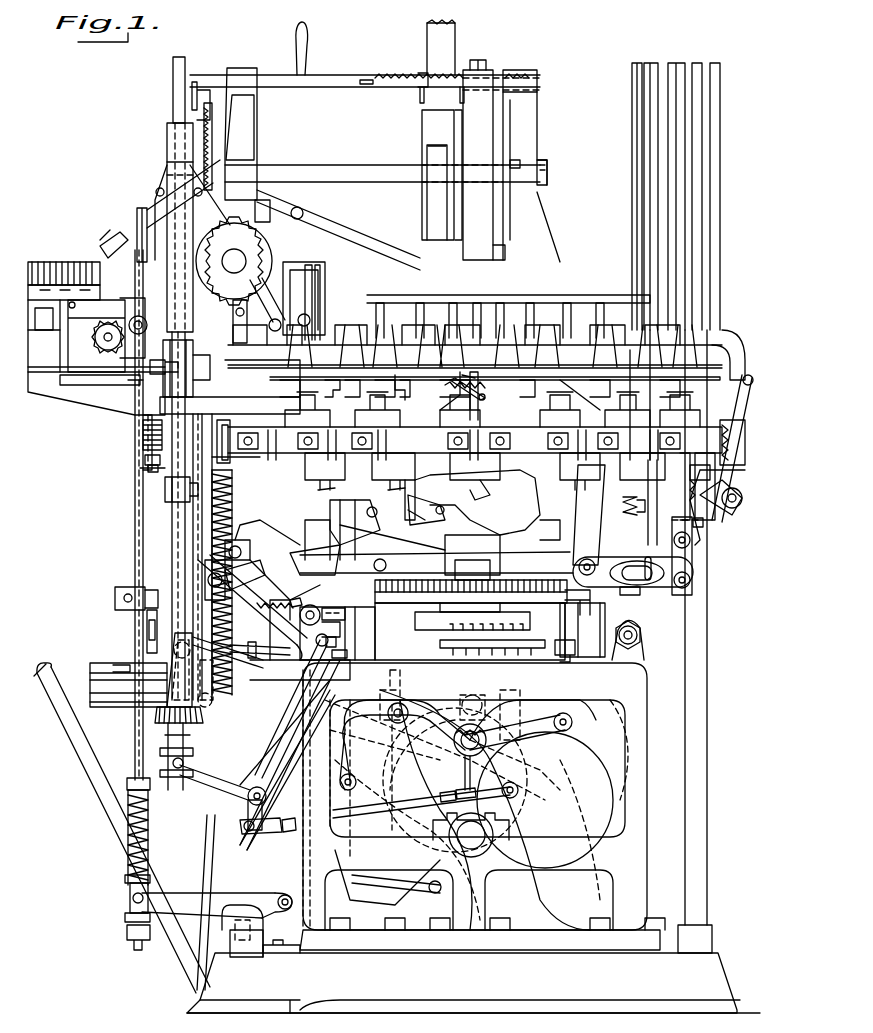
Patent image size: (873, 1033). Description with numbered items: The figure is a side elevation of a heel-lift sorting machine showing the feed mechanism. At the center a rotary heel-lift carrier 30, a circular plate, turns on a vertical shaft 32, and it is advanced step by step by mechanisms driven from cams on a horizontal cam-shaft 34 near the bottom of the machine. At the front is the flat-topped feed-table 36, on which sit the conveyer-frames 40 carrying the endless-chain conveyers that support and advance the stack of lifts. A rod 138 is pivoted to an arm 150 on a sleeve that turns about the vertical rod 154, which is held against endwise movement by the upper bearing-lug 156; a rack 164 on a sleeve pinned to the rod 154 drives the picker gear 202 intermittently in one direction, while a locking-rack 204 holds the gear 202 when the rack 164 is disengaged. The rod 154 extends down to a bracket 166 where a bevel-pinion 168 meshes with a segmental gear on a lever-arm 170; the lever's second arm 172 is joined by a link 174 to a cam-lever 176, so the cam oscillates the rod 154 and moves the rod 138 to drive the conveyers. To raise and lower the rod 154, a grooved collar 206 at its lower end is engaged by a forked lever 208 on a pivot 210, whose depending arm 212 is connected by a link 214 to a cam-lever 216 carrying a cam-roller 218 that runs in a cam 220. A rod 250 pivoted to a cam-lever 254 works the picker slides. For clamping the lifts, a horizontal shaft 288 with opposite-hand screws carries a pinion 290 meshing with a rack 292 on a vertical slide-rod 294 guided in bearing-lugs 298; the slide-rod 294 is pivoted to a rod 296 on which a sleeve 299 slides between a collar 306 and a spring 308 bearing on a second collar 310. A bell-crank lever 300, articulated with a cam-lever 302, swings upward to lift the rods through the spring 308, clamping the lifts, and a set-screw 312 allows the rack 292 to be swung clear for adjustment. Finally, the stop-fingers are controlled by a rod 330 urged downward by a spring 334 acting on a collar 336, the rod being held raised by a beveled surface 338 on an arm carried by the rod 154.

The rotary heel-lift carrier 30 is at (600, 375).
The vertical shaft 32 is at (500, 542).
The horizontal cam-shaft 34 is at (470, 858).
The feed-table 36 is at (40, 360).
The conveyer-frames 40 is at (36, 318).
The rod 138 is at (50, 385).
The arm 150 is at (200, 360).
The rod 154 is at (175, 72).
The upper bearing-lug 156 is at (172, 123).
The rack 164 is at (209, 220).
The bracket 166 is at (165, 700).
The bevel-pinion 168 is at (165, 730).
The lever-arm 170 is at (155, 714).
The second lever-arm 172 is at (175, 600).
The link 174 is at (266, 662).
The cam-lever 176 is at (420, 705).
The gear 202 is at (288, 262).
The locking-rack 204 is at (232, 253).
The grooved collar 206 is at (99, 785).
The lever 208 is at (230, 790).
The pivot 210 is at (243, 826).
The depending arm 212 is at (250, 840).
The link 214 is at (370, 805).
The cam-lever 216 is at (520, 745).
The cam-roller 218 is at (510, 765).
The cam 220 is at (555, 812).
The rod 250 is at (212, 538).
The cam-lever 254 is at (220, 705).
The horizontal shaft 288 is at (100, 342).
The pinion 290 is at (98, 328).
The rack 292 is at (110, 246).
The vertical slide-rod 294 is at (143, 445).
The rod 296 is at (130, 552).
The bearing-lugs 298 is at (138, 208).
The sleeve 299 is at (130, 890).
The bell-crank lever 300 is at (178, 918).
The cam-lever 302 is at (370, 885).
The collar 306 is at (125, 935).
The spring 308 is at (128, 860).
The second collar 310 is at (130, 782).
The set-screw 312 is at (128, 385).
The rod 330 is at (148, 468).
The spring 334 is at (143, 428).
The collar 336 is at (145, 458).
The beveled surface 338 is at (165, 488).